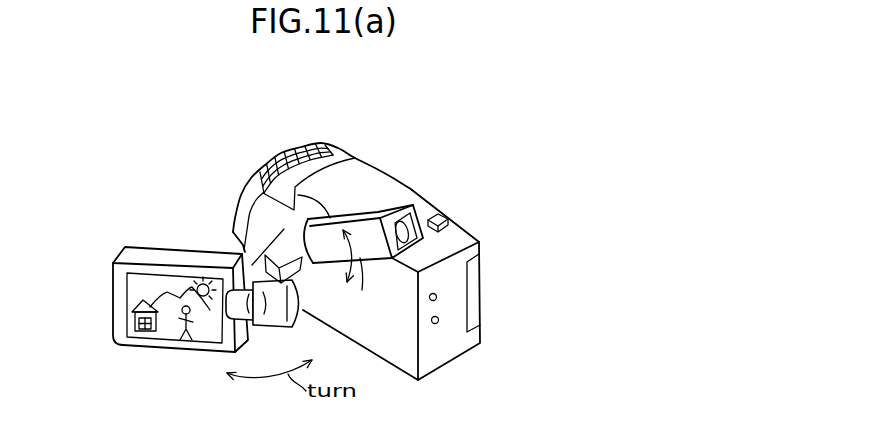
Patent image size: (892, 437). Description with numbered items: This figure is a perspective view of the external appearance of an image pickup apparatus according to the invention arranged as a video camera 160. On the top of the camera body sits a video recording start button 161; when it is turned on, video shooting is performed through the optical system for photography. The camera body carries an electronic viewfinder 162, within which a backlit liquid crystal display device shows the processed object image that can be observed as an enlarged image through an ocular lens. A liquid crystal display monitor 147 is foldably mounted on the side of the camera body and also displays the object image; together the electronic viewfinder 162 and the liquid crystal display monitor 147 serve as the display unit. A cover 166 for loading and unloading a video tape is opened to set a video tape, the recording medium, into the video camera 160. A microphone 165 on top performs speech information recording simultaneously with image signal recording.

The liquid crystal display monitor 147 is at (133, 336).
The video camera 160 is at (465, 356).
The video recording start button 161 is at (447, 219).
The electronic viewfinder 162 is at (362, 233).
The microphone 165 is at (313, 147).
The cover for loading and unloading a video tape 166 is at (472, 295).